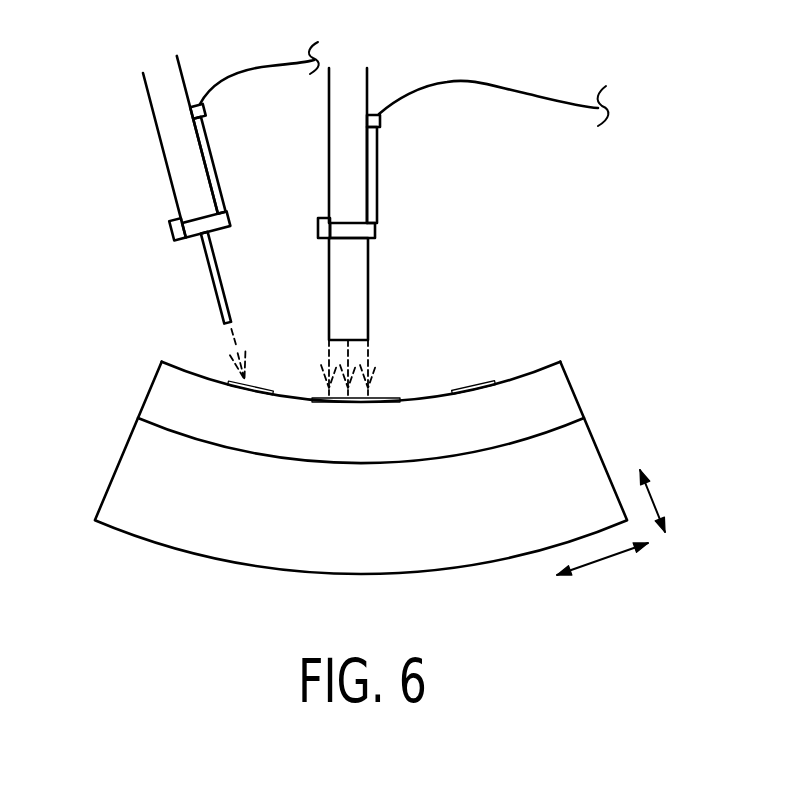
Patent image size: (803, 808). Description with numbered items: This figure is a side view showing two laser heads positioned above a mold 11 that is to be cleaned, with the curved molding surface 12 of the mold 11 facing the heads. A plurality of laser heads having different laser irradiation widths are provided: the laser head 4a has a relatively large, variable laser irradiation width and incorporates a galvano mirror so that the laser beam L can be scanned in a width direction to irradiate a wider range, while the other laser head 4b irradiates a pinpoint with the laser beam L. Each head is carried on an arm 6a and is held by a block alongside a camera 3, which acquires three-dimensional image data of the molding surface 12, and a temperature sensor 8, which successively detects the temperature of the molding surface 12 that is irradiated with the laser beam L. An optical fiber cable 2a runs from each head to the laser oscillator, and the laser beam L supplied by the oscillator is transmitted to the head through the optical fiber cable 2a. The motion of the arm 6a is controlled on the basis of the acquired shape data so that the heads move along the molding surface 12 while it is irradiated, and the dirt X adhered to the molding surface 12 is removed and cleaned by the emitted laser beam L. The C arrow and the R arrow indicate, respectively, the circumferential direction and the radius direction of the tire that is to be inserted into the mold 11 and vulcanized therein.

The optical fiber cable 2a is at (237, 75).
The camera 3 is at (170, 228).
The laser head 4a is at (362, 280).
The laser head 4b is at (217, 278).
The arm 6a is at (168, 158).
The temperature sensor 8 is at (227, 212).
The mold 11 is at (124, 448).
The molding surface 12 is at (538, 365).
The laser beam L is at (237, 342).
The dirt X is at (266, 388).
The R arrow R is at (660, 501).
The C arrow C is at (602, 570).